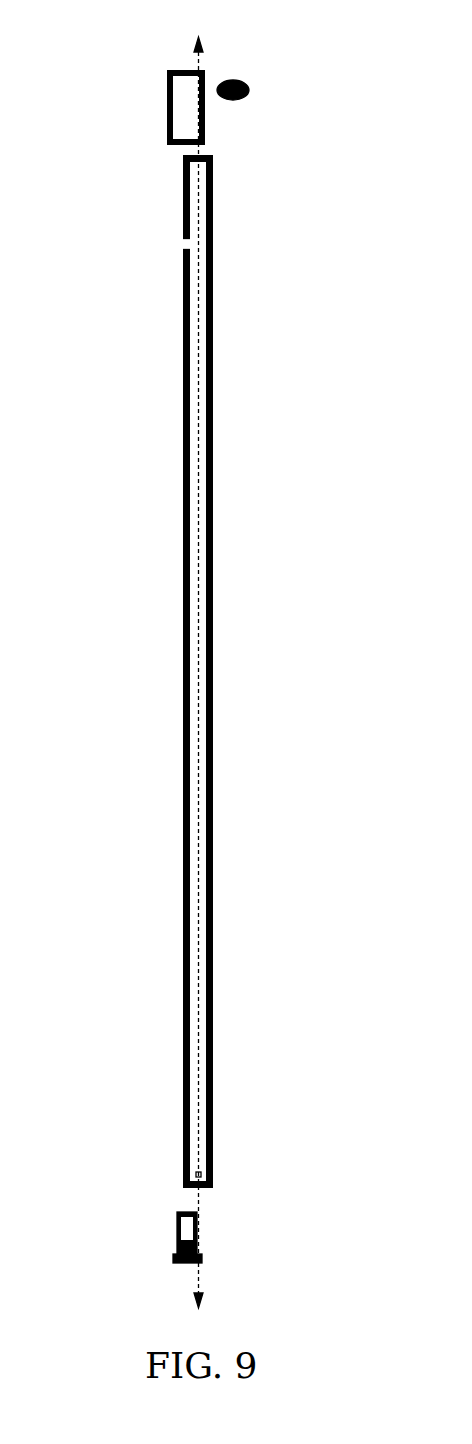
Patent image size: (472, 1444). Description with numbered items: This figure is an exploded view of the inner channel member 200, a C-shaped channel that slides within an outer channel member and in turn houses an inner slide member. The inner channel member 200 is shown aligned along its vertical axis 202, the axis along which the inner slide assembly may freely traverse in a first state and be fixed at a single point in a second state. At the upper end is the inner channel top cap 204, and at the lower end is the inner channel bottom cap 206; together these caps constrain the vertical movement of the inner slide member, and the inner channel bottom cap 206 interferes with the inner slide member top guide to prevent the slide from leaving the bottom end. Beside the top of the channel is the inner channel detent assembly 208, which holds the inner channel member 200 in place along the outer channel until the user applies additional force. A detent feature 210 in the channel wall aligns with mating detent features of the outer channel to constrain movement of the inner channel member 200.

The inner channel member 200 is at (176, 339).
The vertical axis 202 is at (192, 536).
The inner channel top cap 204 is at (152, 74).
The inner channel bottom cap 206 is at (163, 1233).
The inner channel detent assembly 208 is at (259, 127).
The detent feature 210 is at (166, 236).